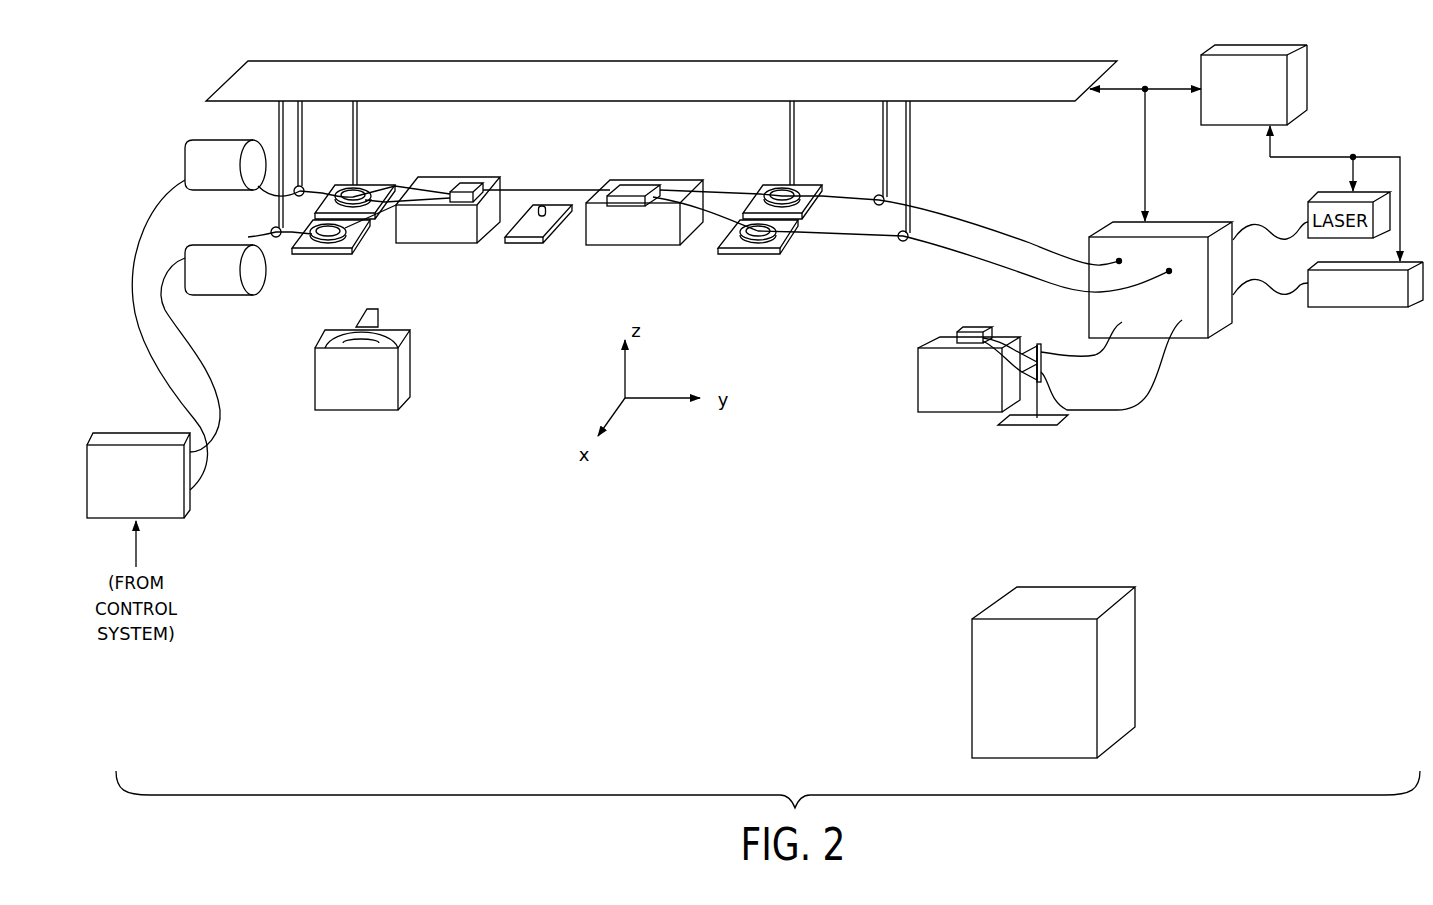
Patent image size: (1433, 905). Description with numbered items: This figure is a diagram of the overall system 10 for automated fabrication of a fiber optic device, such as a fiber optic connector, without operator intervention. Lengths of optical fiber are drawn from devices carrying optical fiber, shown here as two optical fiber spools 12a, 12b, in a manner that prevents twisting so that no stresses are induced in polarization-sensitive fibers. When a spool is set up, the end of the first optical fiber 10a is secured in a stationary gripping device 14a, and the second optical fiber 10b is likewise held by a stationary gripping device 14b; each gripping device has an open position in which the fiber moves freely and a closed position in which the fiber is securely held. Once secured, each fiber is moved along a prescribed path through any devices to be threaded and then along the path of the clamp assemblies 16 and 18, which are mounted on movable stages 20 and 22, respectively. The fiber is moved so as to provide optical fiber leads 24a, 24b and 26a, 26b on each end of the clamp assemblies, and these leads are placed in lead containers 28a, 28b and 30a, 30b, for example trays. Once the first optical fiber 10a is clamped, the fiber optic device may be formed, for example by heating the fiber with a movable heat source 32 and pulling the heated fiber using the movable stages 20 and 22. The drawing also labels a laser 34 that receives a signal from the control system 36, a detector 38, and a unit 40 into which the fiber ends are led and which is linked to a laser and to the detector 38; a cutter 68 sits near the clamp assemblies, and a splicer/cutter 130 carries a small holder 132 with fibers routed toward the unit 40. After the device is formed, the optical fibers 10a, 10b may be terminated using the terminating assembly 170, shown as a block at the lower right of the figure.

The system 10 is at (1285, 448).
The first optical fiber 10a is at (278, 197).
The optical fiber 10b is at (388, 215).
The optical fiber spool 12a is at (210, 148).
The optical fiber spool 12b is at (210, 293).
The stationary gripping device 14a is at (305, 188).
The stationary gripping device 14b is at (277, 237).
The clamp assembly 16 is at (462, 167).
The clamp assembly 18 is at (635, 166).
The movable stage 20 is at (456, 232).
The movable stage 22 is at (618, 237).
The optical fiber lead 24a is at (375, 183).
The optical fiber lead 24b is at (343, 252).
The optical fiber lead 26a is at (774, 182).
The optical fiber lead 26b is at (757, 248).
The lead container 28a is at (382, 199).
The lead container 28b is at (365, 255).
The lead container 30a is at (800, 183).
The lead container 30b is at (727, 250).
The movable heat source 32 is at (528, 243).
The writing laser 34 is at (122, 437).
The control system 36 is at (1287, 93).
The detector 38 is at (1380, 307).
The fiber coupling/measurement unit 40 is at (1217, 322).
The cutter 68 is at (358, 397).
The splicer/cutter 130 is at (918, 354).
The fiber holder 132 is at (977, 328).
The terminating assembly 170 is at (1130, 688).